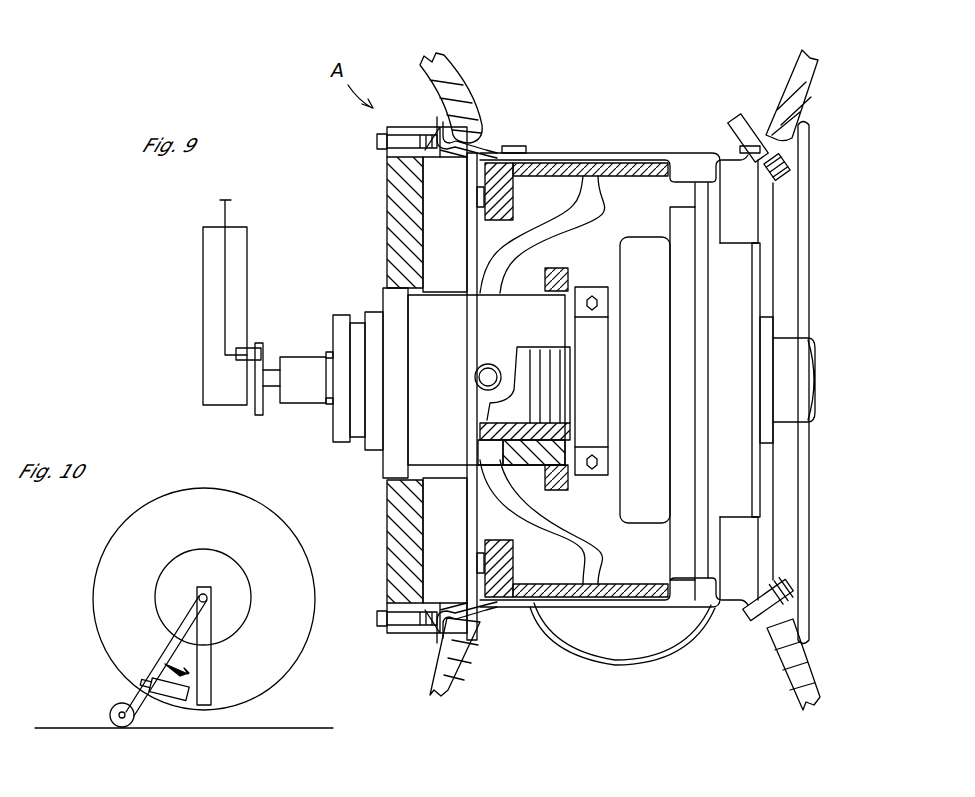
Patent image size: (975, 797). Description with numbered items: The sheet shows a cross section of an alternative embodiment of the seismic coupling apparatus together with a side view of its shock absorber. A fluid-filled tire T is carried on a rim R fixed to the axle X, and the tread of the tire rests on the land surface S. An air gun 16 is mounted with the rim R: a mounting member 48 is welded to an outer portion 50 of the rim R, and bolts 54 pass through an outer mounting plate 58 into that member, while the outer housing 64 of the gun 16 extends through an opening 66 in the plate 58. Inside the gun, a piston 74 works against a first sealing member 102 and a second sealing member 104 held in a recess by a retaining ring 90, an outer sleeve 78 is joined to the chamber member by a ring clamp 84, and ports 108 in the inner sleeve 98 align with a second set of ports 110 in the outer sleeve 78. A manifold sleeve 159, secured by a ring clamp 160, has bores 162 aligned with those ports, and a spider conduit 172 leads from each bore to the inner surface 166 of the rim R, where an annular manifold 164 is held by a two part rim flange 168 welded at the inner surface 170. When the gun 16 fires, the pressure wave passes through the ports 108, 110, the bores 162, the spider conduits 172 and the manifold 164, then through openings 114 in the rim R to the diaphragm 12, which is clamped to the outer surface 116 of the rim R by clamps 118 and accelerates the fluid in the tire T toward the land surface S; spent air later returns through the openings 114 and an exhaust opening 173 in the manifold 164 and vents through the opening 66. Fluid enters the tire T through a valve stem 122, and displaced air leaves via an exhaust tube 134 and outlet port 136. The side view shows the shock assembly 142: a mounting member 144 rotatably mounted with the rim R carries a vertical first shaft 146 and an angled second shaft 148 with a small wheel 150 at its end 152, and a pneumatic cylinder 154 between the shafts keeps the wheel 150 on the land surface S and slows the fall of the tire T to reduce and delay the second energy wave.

In FIG. 9, the diaphragm 12 is at (640, 153).
In FIG. 9, the air gun 16 is at (442, 281).
In FIG. 9, the mounting member 48 is at (453, 160).
In FIG. 9, the outer portion of rim 50 is at (465, 128).
In FIG. 9, the bolts 54 is at (377, 142).
In FIG. 9, the outer mounting plate 58 is at (387, 194).
In FIG. 9, the outer housing 64 is at (372, 312).
In FIG. 9, the opening 66 is at (383, 455).
In FIG. 9, the piston 74 is at (522, 352).
In FIG. 9, the outer sleeve 78 is at (585, 432).
In FIG. 9, the ring clamp 84 is at (592, 287).
In FIG. 9, the retaining ring 90 is at (566, 440).
In FIG. 9, the inner sleeve 98 is at (515, 422).
In FIG. 9, the first sealing member 102 is at (555, 420).
In FIG. 9, the second sealing member 104 is at (560, 420).
In FIG. 9, the ports 108 is at (478, 423).
In FIG. 9, the second set of ports 110 is at (480, 430).
In FIG. 9, the openings 114 is at (538, 610).
In FIG. 9, the outer surface of rim 116 is at (690, 603).
In FIG. 9, the clamps 118 is at (514, 146).
In FIG. 9, the valve stem 122 is at (785, 590).
In FIG. 9, the exhaust tube 134 is at (745, 118).
In FIG. 9, the outlet port 136 is at (790, 178).
In FIG. 10, the shock assembly 142 is at (232, 661).
In FIG. 10, the mounting member 144 is at (205, 585).
In FIG. 10, the first shaft 146 is at (212, 618).
In FIG. 10, the second shaft 148 is at (170, 645).
In FIG. 10, the small wheel 150 is at (108, 712).
In FIG. 10, the end of shaft 152 is at (122, 727).
In FIG. 10, the pneumatic cylinder 154 is at (178, 700).
In FIG. 9, the manifold sleeve 159 is at (560, 490).
In FIG. 9, the ring clamp 160 is at (560, 268).
In FIG. 9, the bores 162 is at (478, 450).
In FIG. 9, the annular manifold 164 is at (634, 178).
In FIG. 9, the inner surface of rim 166 is at (520, 622).
In FIG. 9, the two part rim flange 168 is at (427, 556).
In FIG. 9, the inner surface of rim 170 is at (496, 632).
In FIG. 9, the spider conduit 172 is at (583, 160).
In FIG. 9, the exhaust opening 173 is at (550, 584).
In FIG. 9, the rim R is at (718, 183).
In FIG. 10, the rim R is at (163, 573).
In FIG. 9, the tire T is at (452, 72).
In FIG. 10, the tire T is at (108, 538).
In FIG. 9, the axle X is at (800, 360).
In FIG. 10, the land surface S is at (283, 728).